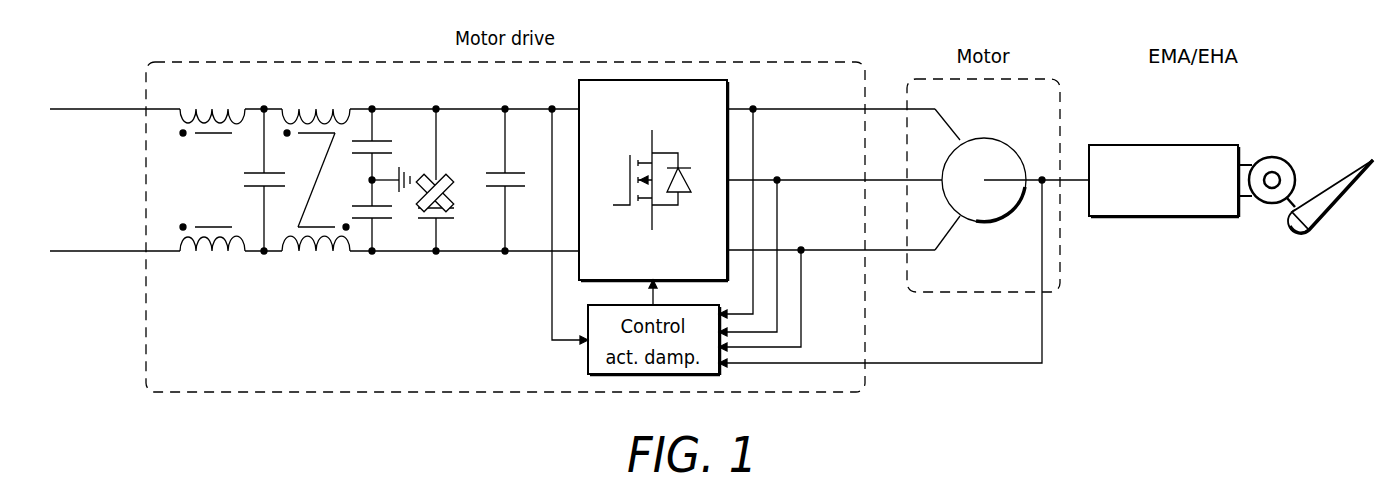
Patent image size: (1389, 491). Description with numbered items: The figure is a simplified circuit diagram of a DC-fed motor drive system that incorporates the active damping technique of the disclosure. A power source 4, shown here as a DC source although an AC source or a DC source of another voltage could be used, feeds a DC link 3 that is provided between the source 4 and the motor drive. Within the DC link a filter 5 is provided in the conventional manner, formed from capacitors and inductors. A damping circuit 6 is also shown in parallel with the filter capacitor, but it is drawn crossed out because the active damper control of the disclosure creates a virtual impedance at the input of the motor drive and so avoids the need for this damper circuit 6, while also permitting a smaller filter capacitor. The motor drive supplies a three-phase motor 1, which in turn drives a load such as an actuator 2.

The motor 1 is at (985, 223).
The actuator 2 is at (1166, 218).
The DC link 3 is at (457, 219).
The source 4 is at (70, 108).
The filter 5 is at (351, 269).
The damping circuit 6 is at (455, 195).